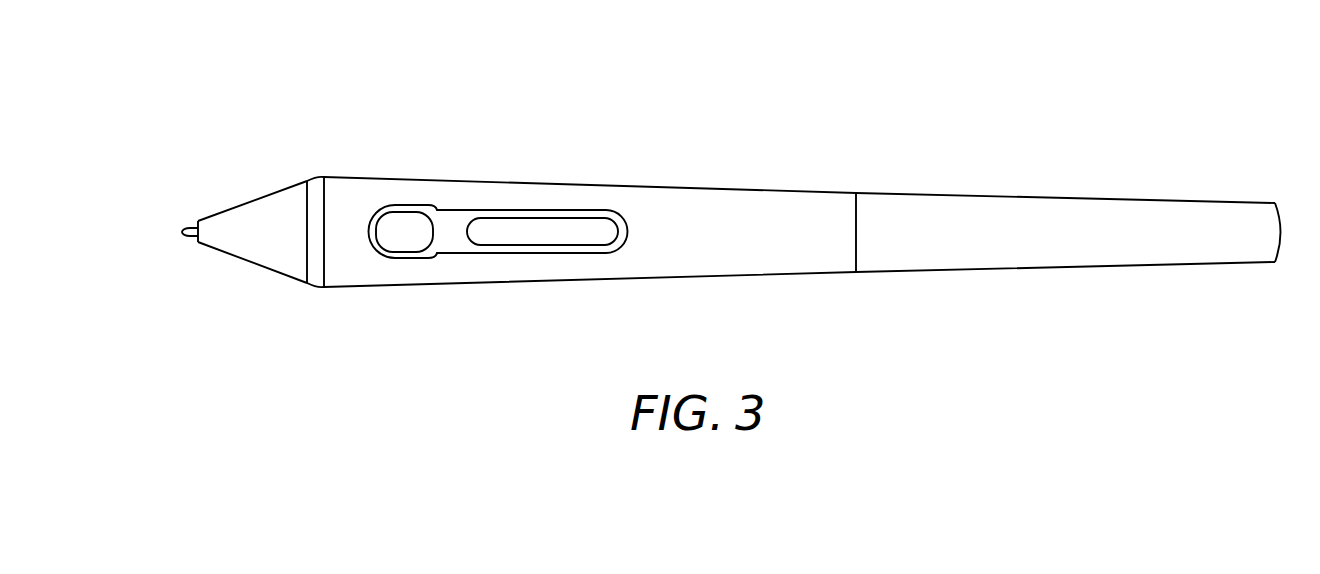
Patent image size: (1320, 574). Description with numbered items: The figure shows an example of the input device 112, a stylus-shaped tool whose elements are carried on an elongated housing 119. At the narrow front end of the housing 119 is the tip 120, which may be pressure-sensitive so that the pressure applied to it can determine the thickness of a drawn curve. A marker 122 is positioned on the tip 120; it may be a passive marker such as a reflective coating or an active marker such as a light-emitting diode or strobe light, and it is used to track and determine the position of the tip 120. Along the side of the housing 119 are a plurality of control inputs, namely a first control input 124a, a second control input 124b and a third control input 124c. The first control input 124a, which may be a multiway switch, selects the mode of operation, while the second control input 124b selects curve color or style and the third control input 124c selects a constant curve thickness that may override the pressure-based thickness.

The input device 112 is at (699, 195).
The housing 119 is at (728, 188).
The tip 120 is at (212, 230).
The marker 122 is at (189, 228).
The first control input 124a is at (403, 220).
The second control input 124b is at (507, 225).
The third control input 124c is at (578, 213).